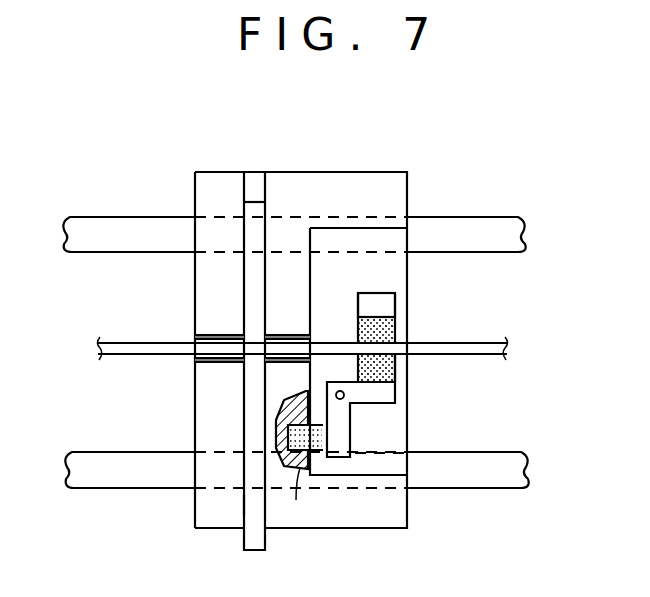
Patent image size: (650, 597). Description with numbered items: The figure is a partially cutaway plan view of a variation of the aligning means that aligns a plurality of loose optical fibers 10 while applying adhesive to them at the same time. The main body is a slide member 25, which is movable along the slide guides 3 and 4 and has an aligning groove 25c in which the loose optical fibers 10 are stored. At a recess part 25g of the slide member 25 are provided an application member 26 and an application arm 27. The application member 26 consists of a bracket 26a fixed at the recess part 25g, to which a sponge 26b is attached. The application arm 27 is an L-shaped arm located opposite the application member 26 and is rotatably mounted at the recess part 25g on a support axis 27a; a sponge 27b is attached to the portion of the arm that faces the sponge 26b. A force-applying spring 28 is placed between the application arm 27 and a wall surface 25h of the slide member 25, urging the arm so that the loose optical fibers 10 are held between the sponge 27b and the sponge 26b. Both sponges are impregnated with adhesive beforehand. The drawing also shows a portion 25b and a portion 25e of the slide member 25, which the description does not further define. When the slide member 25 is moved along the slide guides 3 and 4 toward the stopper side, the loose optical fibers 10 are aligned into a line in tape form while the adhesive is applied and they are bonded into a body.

The slide guide 3 is at (112, 227).
The slide guide 4 is at (481, 478).
The loose optical fibers 10 is at (492, 357).
The slide member 25 is at (311, 166).
The bracket lower wall 25b is at (247, 496).
The aligning groove 25c is at (197, 343).
The bracket rib 25e is at (252, 213).
The recess part 25g is at (378, 239).
The wall surface 25h is at (298, 470).
The application member 26 is at (399, 305).
The bracket 26a is at (360, 304).
The sponge 26b is at (397, 327).
The application arm 27 is at (401, 411).
The support axis 27a is at (327, 383).
The sponge 27b is at (397, 368).
The force-applying spring 28 is at (278, 441).